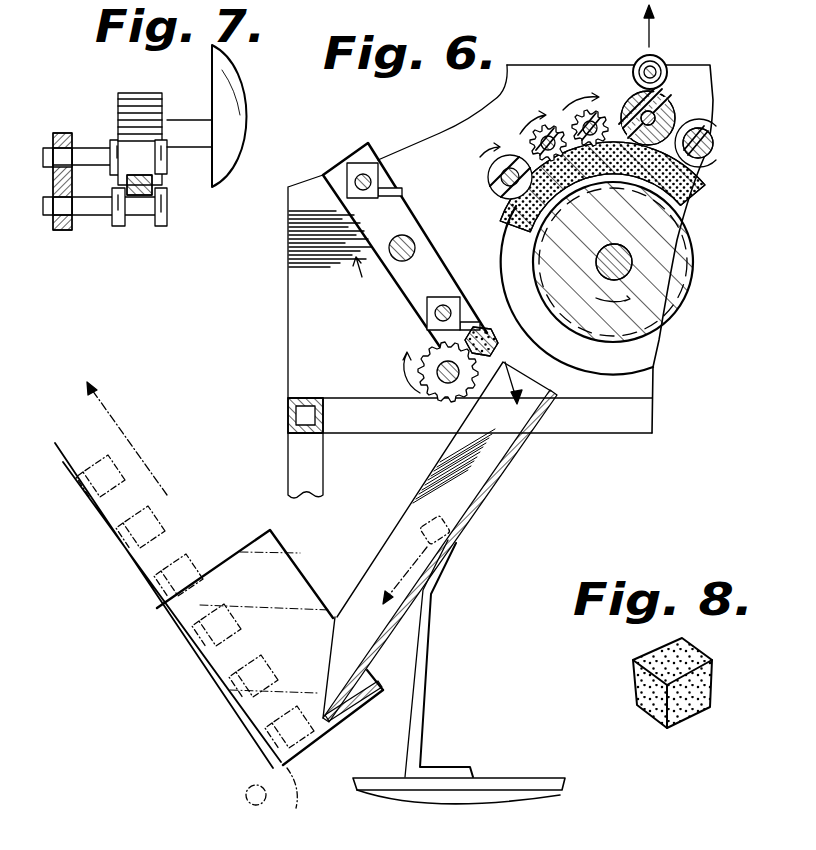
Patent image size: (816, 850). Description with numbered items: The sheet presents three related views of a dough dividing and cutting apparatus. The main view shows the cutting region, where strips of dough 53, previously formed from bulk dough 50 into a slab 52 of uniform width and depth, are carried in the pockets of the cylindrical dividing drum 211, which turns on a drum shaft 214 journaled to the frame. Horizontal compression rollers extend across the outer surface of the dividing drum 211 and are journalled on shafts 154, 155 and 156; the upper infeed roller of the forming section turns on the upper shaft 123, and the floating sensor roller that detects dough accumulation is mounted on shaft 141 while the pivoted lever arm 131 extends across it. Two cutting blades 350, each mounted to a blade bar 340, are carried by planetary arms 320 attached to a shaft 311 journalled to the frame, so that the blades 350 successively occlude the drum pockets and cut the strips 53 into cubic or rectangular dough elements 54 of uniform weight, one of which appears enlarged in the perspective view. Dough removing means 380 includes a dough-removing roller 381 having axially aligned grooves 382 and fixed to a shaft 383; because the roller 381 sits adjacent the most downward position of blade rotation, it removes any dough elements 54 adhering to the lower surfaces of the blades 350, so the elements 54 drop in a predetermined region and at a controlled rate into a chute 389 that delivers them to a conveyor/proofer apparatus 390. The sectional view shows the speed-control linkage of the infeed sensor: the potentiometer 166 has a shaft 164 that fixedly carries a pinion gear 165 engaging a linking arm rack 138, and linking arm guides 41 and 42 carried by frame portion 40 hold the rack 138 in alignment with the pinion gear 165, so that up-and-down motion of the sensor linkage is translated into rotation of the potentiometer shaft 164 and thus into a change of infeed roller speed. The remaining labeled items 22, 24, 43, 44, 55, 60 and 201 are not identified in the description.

In FIG. 6, the frame block 22 is at (290, 383).
In FIG. 6, the base bar 24 is at (642, 413).
In FIG. 7, the frame portion 40 is at (62, 232).
In FIG. 7, the linking arm guide 41 is at (80, 148).
In FIG. 7, the linking arm guide 42 is at (90, 205).
In FIG. 7, the collar 43 is at (112, 140).
In FIG. 7, the drive shaft 44 is at (166, 164).
In FIG. 6, the dough 50 is at (648, 36).
In FIG. 6, the slab of uniform width and depth 52 is at (681, 191).
In FIG. 6, the strips of dough 53 is at (513, 214).
In FIG. 6, the dough elements 54 is at (488, 326).
In FIG. 8, the dough elements 54 is at (688, 700).
In FIG. 6, the gap 55 is at (607, 143).
In FIG. 6, the direction of travel 60 is at (507, 364).
In FIG. 6, the upper shaft 123 is at (716, 151).
In FIG. 6, the lever arm 131 is at (658, 57).
In FIG. 7, the linking arm rack 138 is at (151, 212).
In FIG. 6, the shaft 141 is at (698, 100).
In FIG. 6, the shaft 154 is at (569, 112).
In FIG. 6, the shaft 155 is at (556, 126).
In FIG. 6, the shaft 156 is at (491, 160).
In FIG. 7, the potentiometer shaft 164 is at (222, 128).
In FIG. 7, the pinion gear 165 is at (148, 93).
In FIG. 7, the potentiometer 166 is at (232, 83).
In FIG. 6, the roller 201 is at (494, 203).
In FIG. 6, the dividing drum 211 is at (661, 313).
In FIG. 6, the drum shaft 214 is at (624, 258).
In FIG. 6, the shaft 311 is at (398, 266).
In FIG. 6, the planetary arm 320 is at (366, 143).
In FIG. 6, the blade bar 340 is at (374, 160).
In FIG. 6, the cutting blade 350 is at (404, 190).
In FIG. 6, the dough removing means 380 is at (380, 362).
In FIG. 6, the dough-removing roller 381 is at (513, 451).
In FIG. 6, the axially aligned grooves 382 is at (428, 348).
In FIG. 6, the shaft 383 is at (447, 383).
In FIG. 6, the chute 389 is at (478, 478).
In FIG. 6, the conveyor/proofer apparatus 390 is at (227, 610).